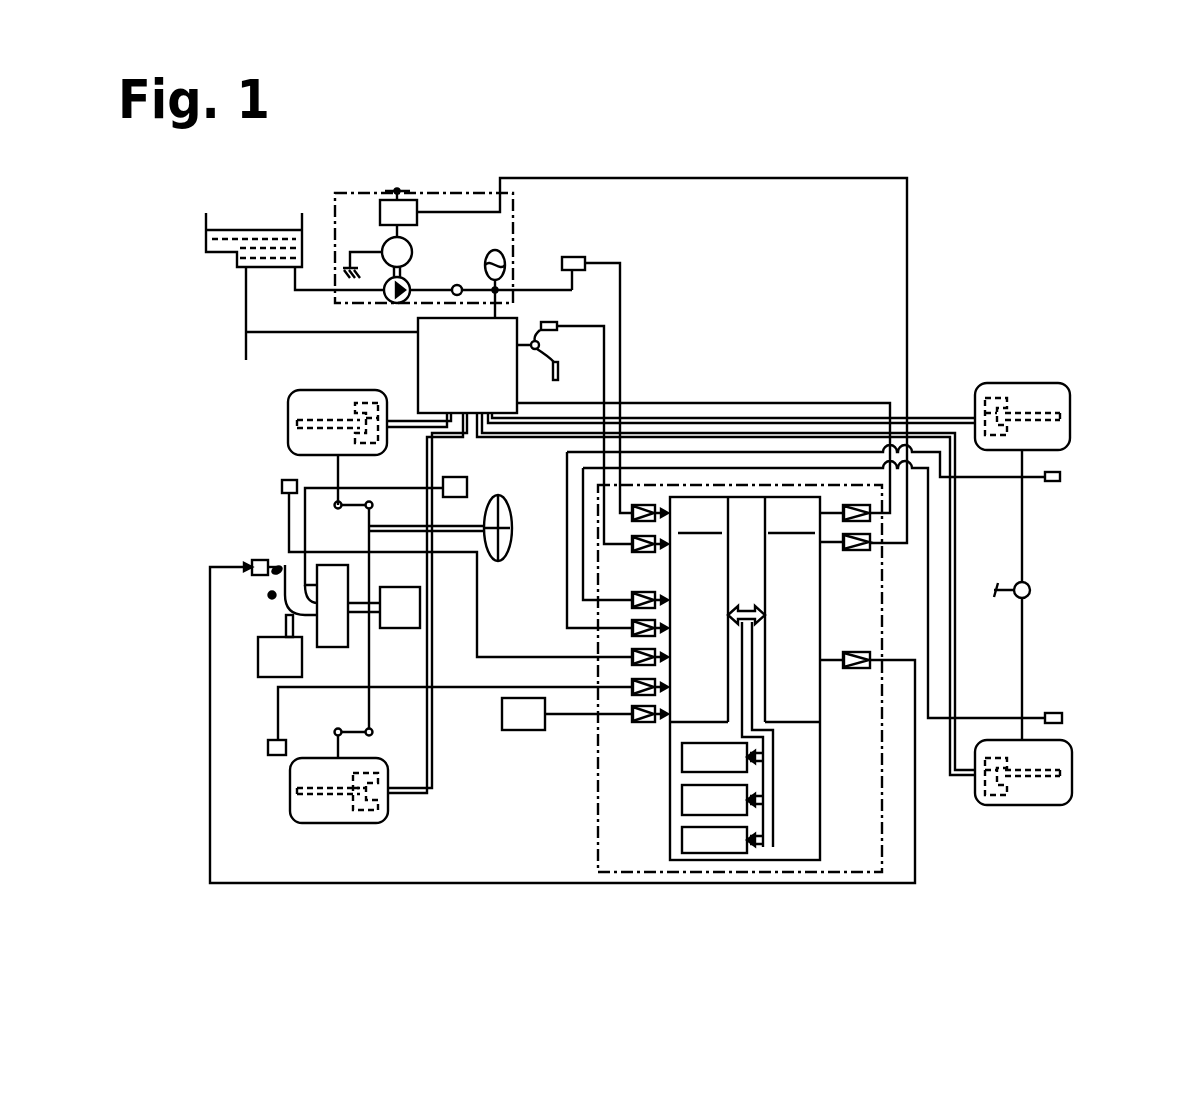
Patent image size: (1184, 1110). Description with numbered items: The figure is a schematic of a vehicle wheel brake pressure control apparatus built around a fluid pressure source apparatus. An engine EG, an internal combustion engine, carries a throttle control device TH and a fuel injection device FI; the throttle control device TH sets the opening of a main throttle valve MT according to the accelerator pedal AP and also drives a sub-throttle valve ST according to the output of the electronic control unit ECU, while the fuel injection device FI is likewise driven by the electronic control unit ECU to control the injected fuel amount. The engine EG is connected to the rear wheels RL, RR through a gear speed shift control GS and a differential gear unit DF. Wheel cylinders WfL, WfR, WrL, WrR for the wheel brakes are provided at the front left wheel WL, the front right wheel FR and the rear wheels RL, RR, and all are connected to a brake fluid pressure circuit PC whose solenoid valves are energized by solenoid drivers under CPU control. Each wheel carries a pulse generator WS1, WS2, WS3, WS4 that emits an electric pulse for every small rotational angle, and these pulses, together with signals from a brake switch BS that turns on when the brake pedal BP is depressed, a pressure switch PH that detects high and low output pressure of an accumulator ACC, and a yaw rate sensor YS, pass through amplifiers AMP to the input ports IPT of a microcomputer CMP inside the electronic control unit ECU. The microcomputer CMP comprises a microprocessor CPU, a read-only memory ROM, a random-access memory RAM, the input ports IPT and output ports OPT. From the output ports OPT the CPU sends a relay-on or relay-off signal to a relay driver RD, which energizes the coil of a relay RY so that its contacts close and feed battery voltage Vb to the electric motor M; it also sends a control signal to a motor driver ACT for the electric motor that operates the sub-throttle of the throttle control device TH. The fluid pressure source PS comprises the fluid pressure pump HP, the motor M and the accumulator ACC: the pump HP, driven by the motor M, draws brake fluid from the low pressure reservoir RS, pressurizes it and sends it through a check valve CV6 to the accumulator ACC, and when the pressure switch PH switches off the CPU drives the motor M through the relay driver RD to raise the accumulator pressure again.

The low pressure reservoir RS is at (206, 240).
The fluid pressure source PS is at (517, 224).
The battery voltage Vb is at (398, 181).
The relay RY is at (398, 212).
The electric motor M is at (377, 251).
The fluid pressure pump HP is at (410, 283).
The check valve CV6 is at (455, 283).
The accumulator ACC is at (495, 250).
The pressure switch PH is at (574, 257).
The brake switch BS is at (551, 322).
The brake pedal BP is at (558, 370).
The brake fluid pressure circuit PC is at (518, 399).
The front right wheel FR is at (288, 402).
The wheel cylinder WfR is at (355, 405).
The front left wheel WL is at (313, 823).
The wheel cylinder WfL is at (375, 808).
The rear right wheel RR is at (1055, 383).
The wheel cylinder WrR is at (993, 383).
The rear left wheel RL is at (1048, 805).
The wheel cylinder WrL is at (993, 805).
The differential gear unit DF is at (1030, 590).
The pulse generator WS1 is at (268, 748).
The pulse generator WS2 is at (282, 480).
The pulse generator WS3 is at (1055, 713).
The pulse generator WS4 is at (1060, 478).
The accelerator pedal AP is at (467, 485).
The sub-throttle valve ST is at (248, 557).
The throttle control device TH is at (276, 550).
The main throttle valve MT is at (262, 596).
The fuel injection device FI is at (280, 657).
The engine EG is at (327, 632).
The gear speed shift control GS is at (400, 607).
The yaw rate sensor YS is at (567, 714).
The electronic control unit ECU is at (691, 678).
The input ports IPT is at (700, 518).
The output ports OPT is at (792, 518).
The microprocessor CPU is at (722, 758).
The read-only memory ROM is at (722, 800).
The random-access memory RAM is at (722, 841).
The amplifiers AMP is at (645, 725).
The relay driver RD is at (855, 550).
The motor driver ACT is at (856, 668).
The microcomputer CMP is at (822, 832).